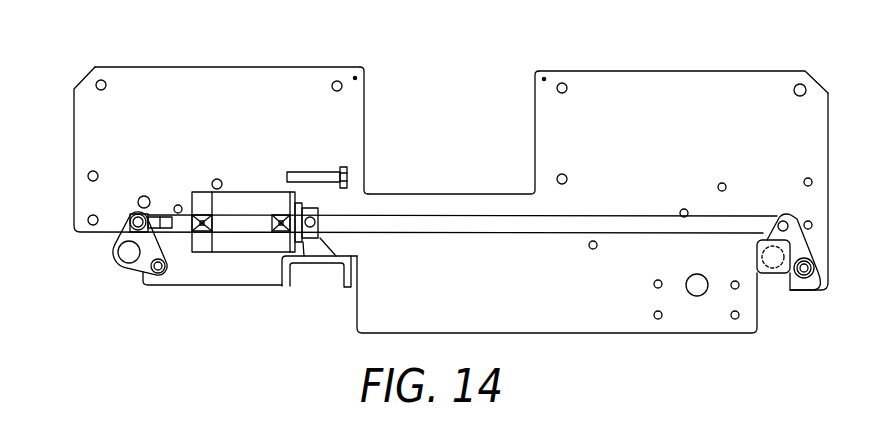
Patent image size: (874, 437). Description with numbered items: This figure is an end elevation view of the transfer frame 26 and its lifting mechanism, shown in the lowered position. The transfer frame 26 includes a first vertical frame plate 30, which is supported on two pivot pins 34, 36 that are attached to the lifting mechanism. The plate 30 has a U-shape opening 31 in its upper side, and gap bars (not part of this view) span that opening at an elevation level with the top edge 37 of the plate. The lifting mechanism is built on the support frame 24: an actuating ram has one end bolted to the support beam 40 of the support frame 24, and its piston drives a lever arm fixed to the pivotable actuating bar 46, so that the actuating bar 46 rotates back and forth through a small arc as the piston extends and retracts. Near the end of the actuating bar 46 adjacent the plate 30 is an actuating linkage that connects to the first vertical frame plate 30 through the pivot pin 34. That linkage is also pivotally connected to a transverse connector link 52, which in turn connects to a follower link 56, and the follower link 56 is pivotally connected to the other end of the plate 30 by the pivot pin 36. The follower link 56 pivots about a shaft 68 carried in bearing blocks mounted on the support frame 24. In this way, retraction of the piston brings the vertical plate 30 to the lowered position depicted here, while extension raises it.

The transfer frame 26 is at (451, 182).
The first vertical frame plate 30 is at (205, 73).
The U-shape opening 31 is at (366, 106).
The top edge 37 is at (600, 71).
The transverse connector link 52 is at (473, 224).
The actuating bar 46 is at (125, 252).
The pivot pin 34 is at (158, 266).
The support frame 24 is at (295, 297).
The support beam 40 is at (293, 282).
The shaft 68 is at (770, 262).
The follower link 56 is at (782, 272).
The pivot pin 36 is at (806, 268).